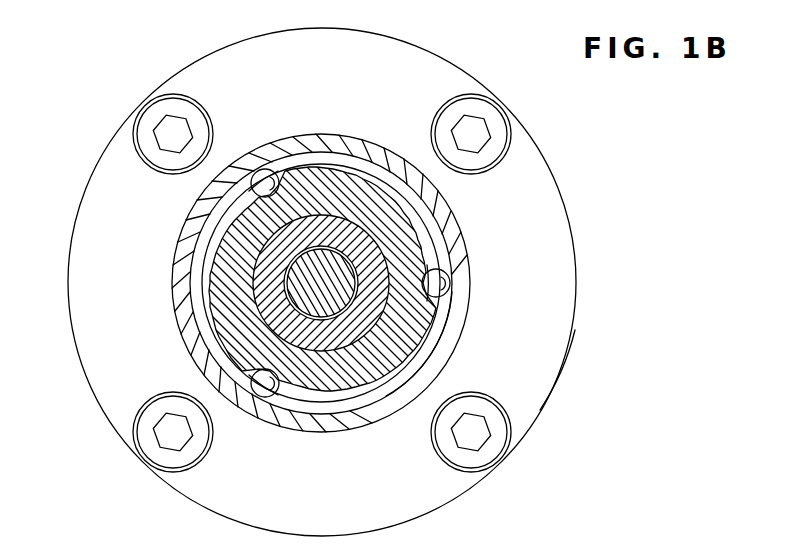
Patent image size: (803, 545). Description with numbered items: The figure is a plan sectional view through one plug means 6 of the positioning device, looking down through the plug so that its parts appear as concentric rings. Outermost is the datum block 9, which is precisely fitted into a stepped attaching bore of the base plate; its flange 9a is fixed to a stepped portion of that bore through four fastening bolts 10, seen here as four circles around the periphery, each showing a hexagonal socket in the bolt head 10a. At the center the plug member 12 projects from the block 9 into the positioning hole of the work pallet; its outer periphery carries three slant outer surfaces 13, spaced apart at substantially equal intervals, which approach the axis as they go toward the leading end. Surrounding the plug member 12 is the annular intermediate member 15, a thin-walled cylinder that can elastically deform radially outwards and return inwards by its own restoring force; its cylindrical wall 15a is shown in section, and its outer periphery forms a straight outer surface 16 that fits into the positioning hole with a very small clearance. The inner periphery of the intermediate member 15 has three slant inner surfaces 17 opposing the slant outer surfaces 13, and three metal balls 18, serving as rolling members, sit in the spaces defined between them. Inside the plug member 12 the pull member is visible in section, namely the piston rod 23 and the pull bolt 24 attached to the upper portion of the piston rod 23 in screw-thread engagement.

The plug means 6 is at (601, 237).
The datum block 9 is at (577, 340).
The flange 9a is at (546, 393).
The fastening bolt 10 is at (133, 147).
The bolt head 10a is at (148, 115).
The plug member 12 is at (213, 258).
The slant outer surface 13 is at (258, 218).
The intermediate member 15 is at (460, 208).
The outer ring cylindrical portion 15a is at (356, 144).
The straight outer surface 16 is at (452, 352).
The slant inner surface 17 is at (240, 181).
The metal ball 18 is at (262, 176).
The piston rod 23 is at (340, 342).
The pull bolt 24 is at (346, 299).